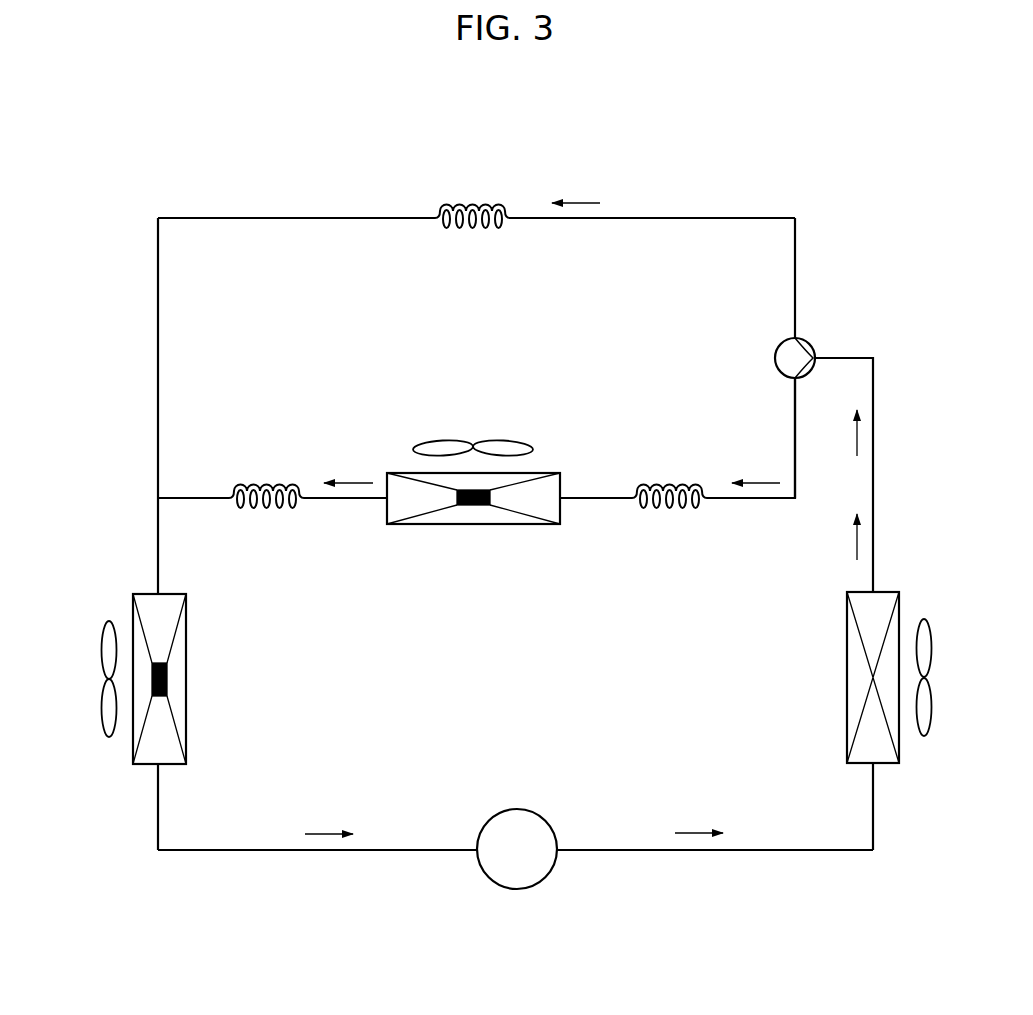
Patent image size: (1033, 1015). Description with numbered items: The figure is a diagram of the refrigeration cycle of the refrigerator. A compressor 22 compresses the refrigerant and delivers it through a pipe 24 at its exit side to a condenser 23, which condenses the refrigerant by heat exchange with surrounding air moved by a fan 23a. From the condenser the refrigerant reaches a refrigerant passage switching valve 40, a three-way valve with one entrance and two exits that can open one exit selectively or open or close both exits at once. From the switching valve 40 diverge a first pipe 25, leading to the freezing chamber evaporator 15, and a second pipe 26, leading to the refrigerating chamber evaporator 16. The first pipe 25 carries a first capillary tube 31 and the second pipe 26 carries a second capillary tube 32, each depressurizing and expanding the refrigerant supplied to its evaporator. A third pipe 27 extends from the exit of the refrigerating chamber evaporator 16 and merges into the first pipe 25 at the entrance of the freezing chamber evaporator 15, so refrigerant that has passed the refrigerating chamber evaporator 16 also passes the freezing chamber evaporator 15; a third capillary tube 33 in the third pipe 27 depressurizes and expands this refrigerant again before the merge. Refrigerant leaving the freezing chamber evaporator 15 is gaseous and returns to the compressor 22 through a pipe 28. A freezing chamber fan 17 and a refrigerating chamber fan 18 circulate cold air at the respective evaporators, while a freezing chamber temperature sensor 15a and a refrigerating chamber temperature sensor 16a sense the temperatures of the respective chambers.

The freezing chamber evaporator 15 is at (127, 660).
The freezing chamber temperature sensor 15a is at (152, 693).
The refrigerating chamber evaporator 16 is at (505, 508).
The refrigerating chamber temperature sensor 16a is at (477, 490).
The freezing chamber fan 17 is at (100, 712).
The refrigerating chamber fan 18 is at (443, 448).
The compressor 22 is at (508, 890).
The condenser 23 is at (847, 690).
The fan 23a is at (922, 620).
The pipe 24 is at (748, 850).
The first pipe 25 is at (653, 218).
The second pipe 26 is at (793, 434).
The third pipe 27 is at (350, 500).
The pipe 28 is at (268, 850).
The first capillary tube 31 is at (463, 205).
The second capillary tube 32 is at (662, 487).
The third capillary tube 33 is at (260, 487).
The refrigerant passage switching valve 40 is at (808, 342).